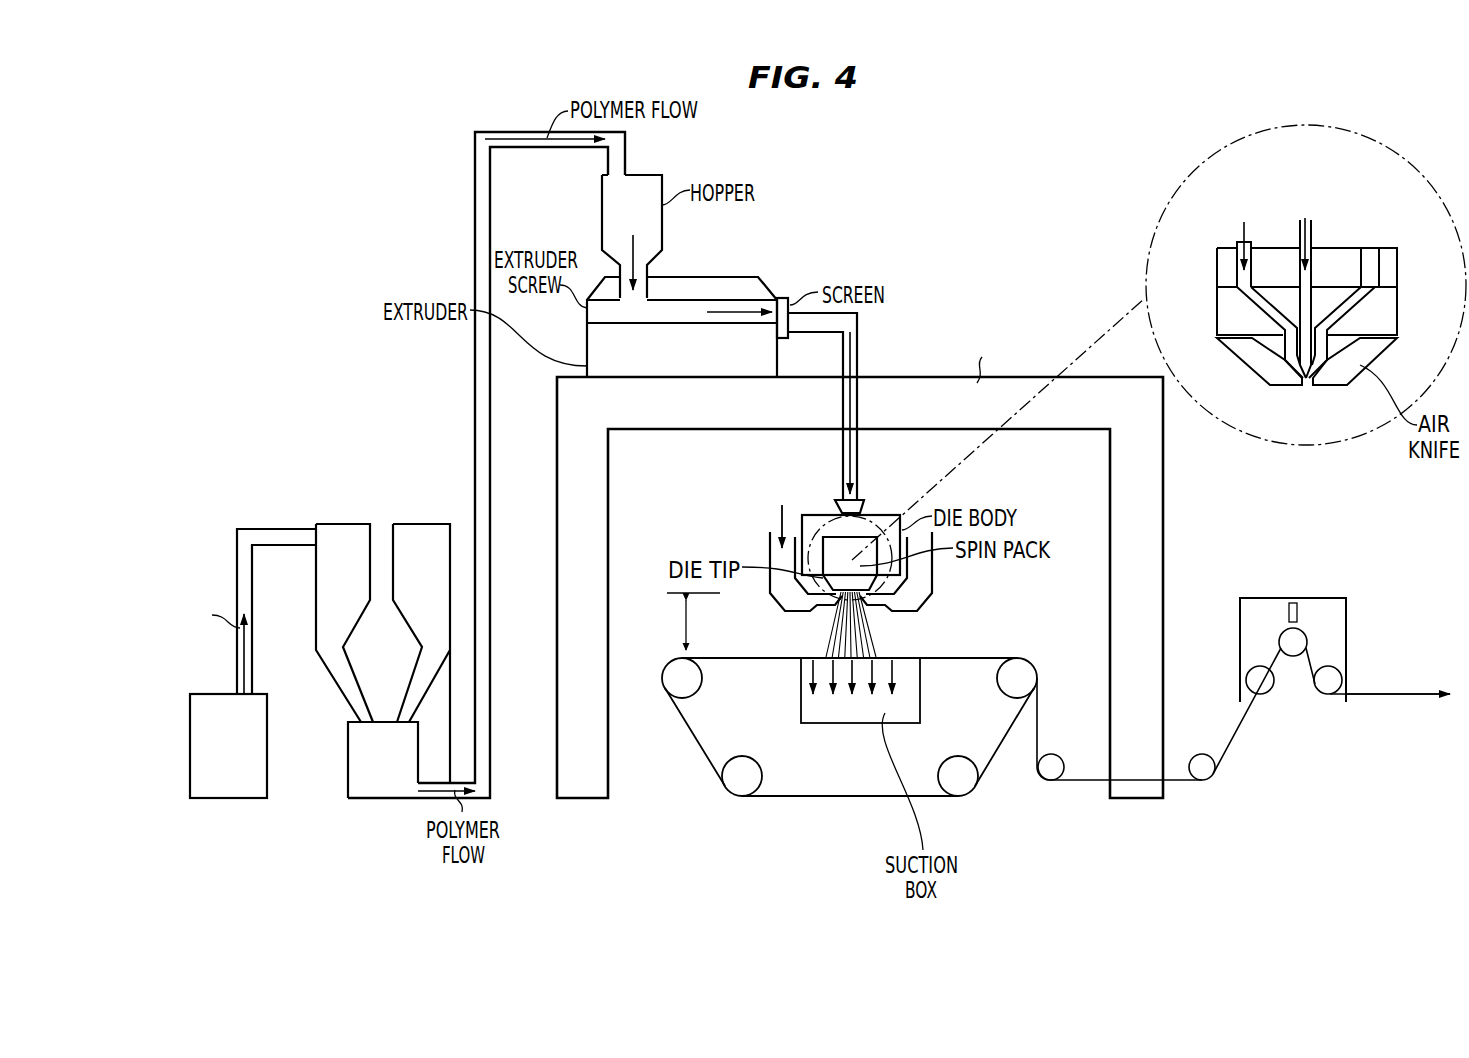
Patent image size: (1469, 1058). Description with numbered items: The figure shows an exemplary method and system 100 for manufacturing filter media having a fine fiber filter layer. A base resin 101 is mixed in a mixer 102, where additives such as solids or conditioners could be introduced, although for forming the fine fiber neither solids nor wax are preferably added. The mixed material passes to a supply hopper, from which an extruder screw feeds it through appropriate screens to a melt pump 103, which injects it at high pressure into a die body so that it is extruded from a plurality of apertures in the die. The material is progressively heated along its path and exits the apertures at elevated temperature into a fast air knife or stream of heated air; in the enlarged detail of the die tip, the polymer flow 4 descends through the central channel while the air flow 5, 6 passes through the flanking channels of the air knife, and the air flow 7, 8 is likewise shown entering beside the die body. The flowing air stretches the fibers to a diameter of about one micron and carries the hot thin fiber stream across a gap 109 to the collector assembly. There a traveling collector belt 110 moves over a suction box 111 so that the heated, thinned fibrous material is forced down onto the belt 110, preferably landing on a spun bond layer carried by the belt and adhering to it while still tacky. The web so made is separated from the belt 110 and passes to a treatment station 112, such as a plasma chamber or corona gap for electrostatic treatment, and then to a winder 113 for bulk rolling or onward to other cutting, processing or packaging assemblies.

The method and system 100 is at (1026, 298).
The base resin 101 is at (226, 787).
The mixer 102 is at (377, 787).
The melt pump 103 is at (867, 498).
The gap 109 is at (685, 633).
The collector belt 110 is at (1056, 742).
The suction box 111 is at (798, 765).
The treatment station 112 is at (1293, 598).
The winder 113 is at (1396, 694).
The polymer flow 4 is at (1305, 240).
The air flow 5 is at (1249, 251).
The air flow 6 is at (1243, 232).
The air flow 7 is at (753, 517).
The air flow 8 is at (782, 528).